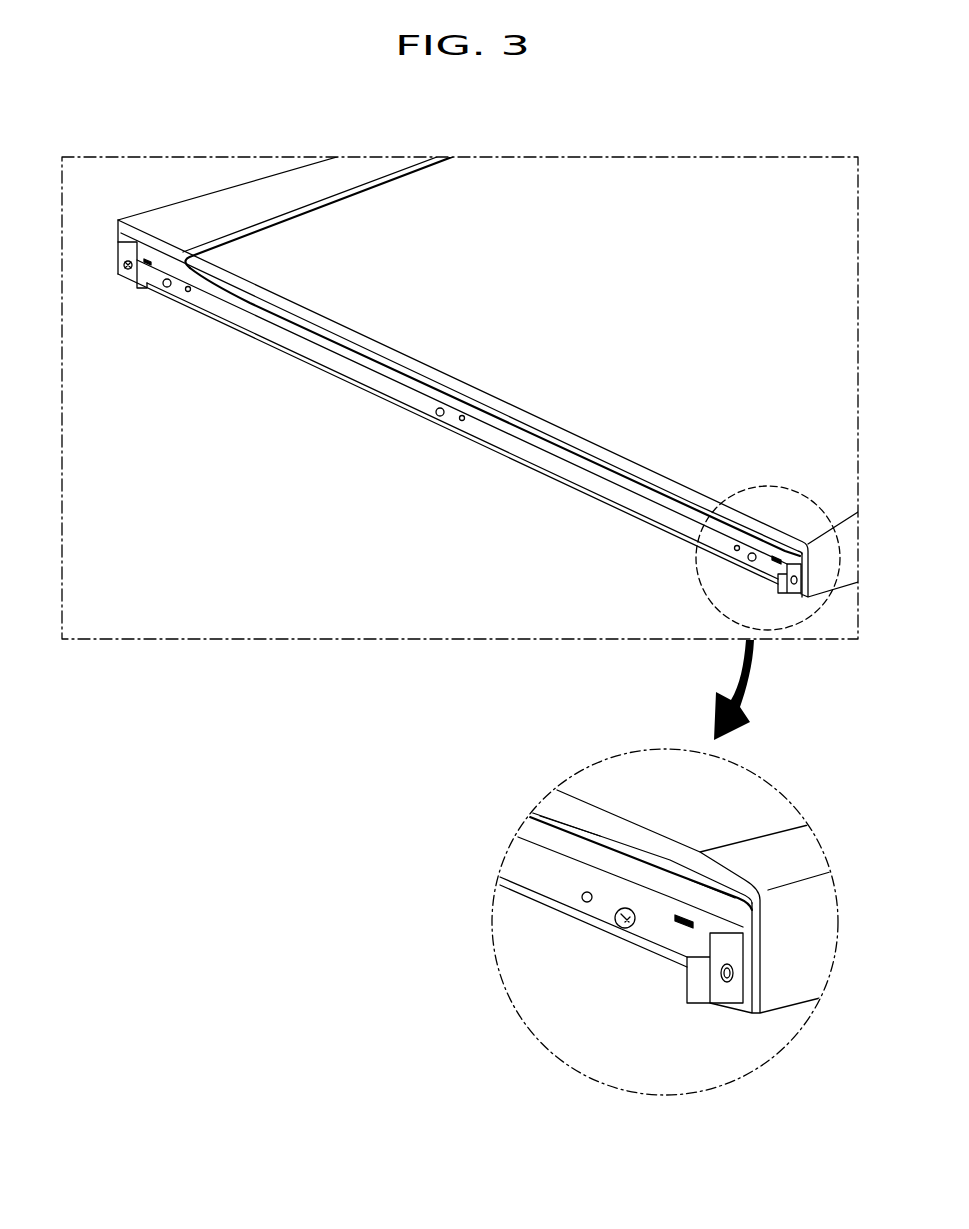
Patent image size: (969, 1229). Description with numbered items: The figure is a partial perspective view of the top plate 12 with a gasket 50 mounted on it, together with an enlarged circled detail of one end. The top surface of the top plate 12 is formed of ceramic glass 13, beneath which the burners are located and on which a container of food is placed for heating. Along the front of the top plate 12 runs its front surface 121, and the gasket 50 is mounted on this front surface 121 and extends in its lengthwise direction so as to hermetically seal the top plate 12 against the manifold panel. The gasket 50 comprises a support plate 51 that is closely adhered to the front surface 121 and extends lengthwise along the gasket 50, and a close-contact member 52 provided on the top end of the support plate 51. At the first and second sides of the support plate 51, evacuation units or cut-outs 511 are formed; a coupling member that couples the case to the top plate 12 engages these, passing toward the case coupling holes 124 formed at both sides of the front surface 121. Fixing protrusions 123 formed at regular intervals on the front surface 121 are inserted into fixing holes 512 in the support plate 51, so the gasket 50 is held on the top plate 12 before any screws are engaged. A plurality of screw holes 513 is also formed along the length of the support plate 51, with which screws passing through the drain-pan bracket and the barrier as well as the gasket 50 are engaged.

The top plate 12 is at (277, 190).
The ceramic glass 13 is at (393, 208).
The gasket 50 is at (459, 613).
The support plate 51 is at (337, 360).
The close-contact member 52 is at (304, 331).
The evacuation unit 511 is at (128, 270).
The fixing hole 512 is at (676, 926).
The screw hole 513 is at (165, 289).
The front surface 121 is at (558, 818).
The fixing protrusion 123 is at (686, 913).
The case coupling hole 124 is at (726, 984).